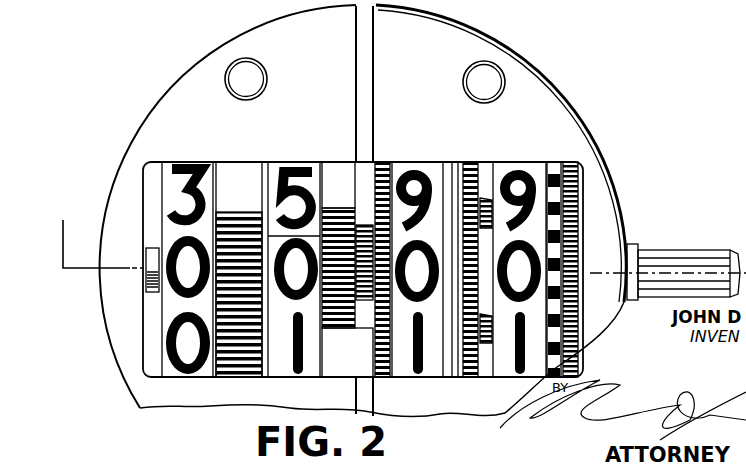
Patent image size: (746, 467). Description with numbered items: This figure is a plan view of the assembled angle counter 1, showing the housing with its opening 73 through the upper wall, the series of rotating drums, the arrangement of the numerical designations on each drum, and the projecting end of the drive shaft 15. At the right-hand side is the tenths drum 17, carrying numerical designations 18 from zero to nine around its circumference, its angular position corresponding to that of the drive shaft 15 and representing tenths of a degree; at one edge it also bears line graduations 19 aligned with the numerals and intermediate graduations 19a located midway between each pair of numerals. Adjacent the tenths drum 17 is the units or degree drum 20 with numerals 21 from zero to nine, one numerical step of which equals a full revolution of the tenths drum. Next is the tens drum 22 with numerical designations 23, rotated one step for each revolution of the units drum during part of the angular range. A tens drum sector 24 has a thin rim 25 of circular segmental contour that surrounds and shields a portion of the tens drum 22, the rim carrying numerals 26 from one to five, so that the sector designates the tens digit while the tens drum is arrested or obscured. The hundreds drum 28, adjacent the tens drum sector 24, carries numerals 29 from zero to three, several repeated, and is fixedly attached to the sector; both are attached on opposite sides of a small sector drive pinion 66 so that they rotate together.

The counter axis 1 is at (101, 259).
The drive shaft 15 is at (650, 250).
The tenths drum 17 is at (484, 289).
The numerical designations 18 is at (512, 165).
The line graduations 19 is at (566, 270).
The intermediate graduations 19a is at (553, 228).
The units or degree drum 20 is at (427, 368).
The numerals 21 is at (411, 165).
The tens drum 22 is at (283, 359).
The numerical designations 23 is at (310, 342).
The tens drum sector 24 is at (266, 158).
The rim 25 is at (312, 181).
The numerals 26 is at (298, 163).
The hundreds drum 28 is at (168, 370).
The numerals 29 is at (179, 163).
The sector drive pinion 66 is at (232, 322).
The opening 73 is at (153, 352).